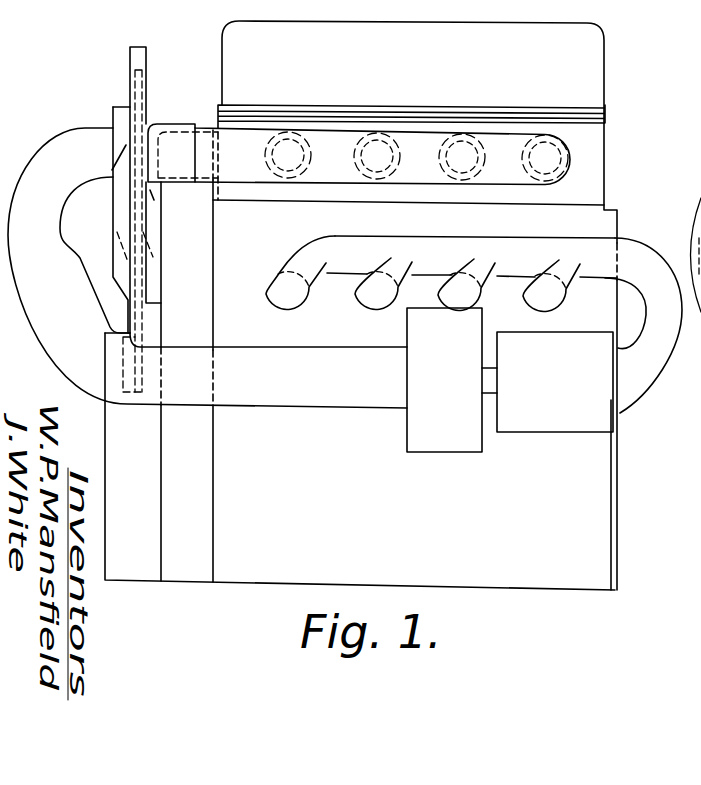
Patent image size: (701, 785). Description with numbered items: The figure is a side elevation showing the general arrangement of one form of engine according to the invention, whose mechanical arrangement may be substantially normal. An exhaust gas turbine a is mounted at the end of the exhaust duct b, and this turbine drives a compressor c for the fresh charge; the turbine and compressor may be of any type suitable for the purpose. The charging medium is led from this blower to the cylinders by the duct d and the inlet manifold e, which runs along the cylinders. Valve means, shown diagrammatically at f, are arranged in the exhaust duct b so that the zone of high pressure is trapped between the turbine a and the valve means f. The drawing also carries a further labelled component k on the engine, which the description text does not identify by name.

The gas turbine a is at (434, 452).
The exhaust gas pipe to turbine b is at (58, 357).
The compressor c is at (563, 425).
The air pipe from manifold to compressor d is at (642, 382).
The air manifold pipe with cylinder connections e is at (428, 241).
The supply pipe with valve f is at (138, 80).
The exhaust manifold k is at (338, 145).